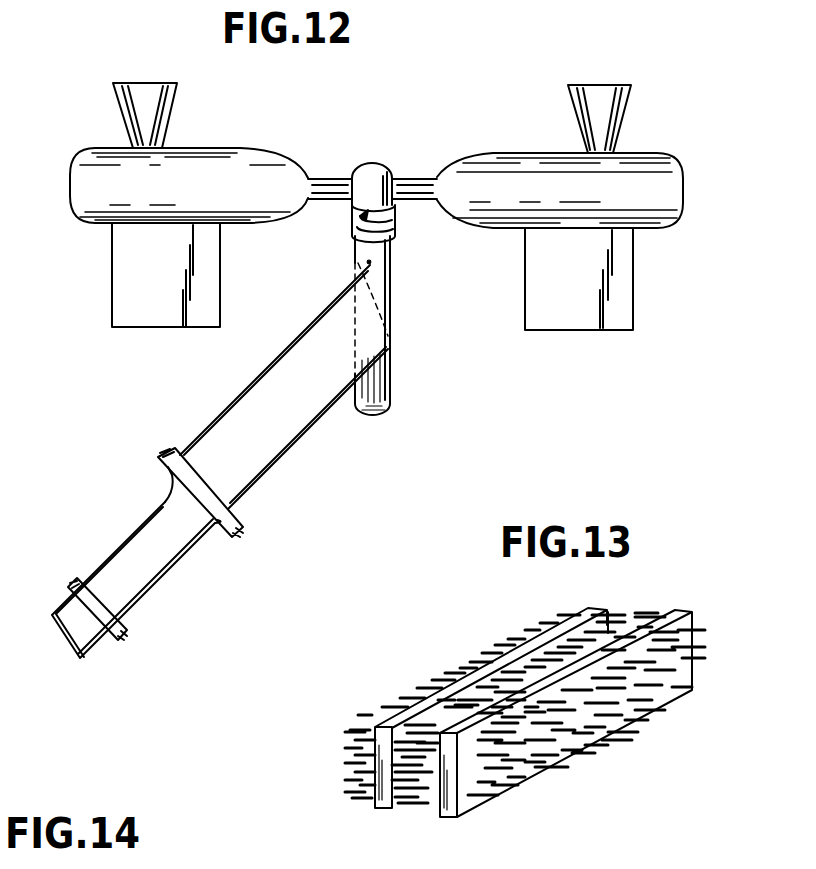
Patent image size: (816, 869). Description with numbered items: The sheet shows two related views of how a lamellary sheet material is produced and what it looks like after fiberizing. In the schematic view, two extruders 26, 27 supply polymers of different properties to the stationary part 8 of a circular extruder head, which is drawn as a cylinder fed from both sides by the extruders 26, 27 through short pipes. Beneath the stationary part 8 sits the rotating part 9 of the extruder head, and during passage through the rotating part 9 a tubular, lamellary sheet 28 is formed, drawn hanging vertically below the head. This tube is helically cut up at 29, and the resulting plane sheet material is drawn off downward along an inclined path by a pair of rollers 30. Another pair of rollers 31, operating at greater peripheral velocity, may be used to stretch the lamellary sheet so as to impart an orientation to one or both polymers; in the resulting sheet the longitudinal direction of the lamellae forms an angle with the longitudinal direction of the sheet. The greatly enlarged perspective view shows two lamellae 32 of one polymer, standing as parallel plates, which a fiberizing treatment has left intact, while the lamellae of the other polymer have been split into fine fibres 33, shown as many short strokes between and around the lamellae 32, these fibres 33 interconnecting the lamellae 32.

In FIG. 12, the stationary part of the circular extruder head 8 is at (373, 177).
In FIG. 12, the rotating part of the extruder head 9 is at (388, 219).
In FIG. 12, the extruder 26 is at (181, 192).
In FIG. 12, the extruder 27 is at (585, 193).
In FIG. 12, the tubular lamellary sheet 28 is at (372, 295).
In FIG. 12, the helical cut 29 is at (366, 263).
In FIG. 12, the pair of rollers 30 is at (178, 452).
In FIG. 12, the pair of rollers 31 is at (80, 582).
In FIG. 13, the lamellae 32 is at (380, 805).
In FIG. 13, the fine fibres 33 is at (692, 651).